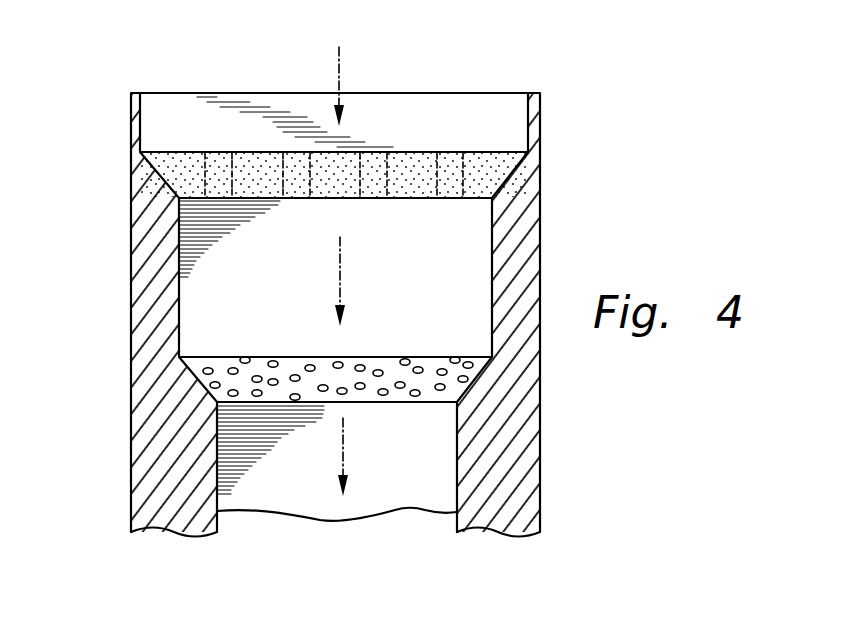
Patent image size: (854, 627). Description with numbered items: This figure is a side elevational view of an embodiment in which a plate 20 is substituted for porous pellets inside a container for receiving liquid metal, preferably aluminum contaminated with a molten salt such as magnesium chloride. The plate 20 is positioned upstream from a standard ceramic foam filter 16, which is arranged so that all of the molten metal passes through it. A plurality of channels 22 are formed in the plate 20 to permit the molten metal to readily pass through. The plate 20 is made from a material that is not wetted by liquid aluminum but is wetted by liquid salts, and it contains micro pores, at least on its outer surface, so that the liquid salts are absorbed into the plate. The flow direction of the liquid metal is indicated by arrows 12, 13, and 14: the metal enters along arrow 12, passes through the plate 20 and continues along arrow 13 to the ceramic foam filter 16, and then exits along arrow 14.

The arrow 12 is at (340, 68).
The arrow 13 is at (342, 270).
The arrow 14 is at (345, 447).
The ceramic foam filter 16 is at (197, 374).
The plate 20 is at (170, 173).
The channels 22 is at (470, 183).